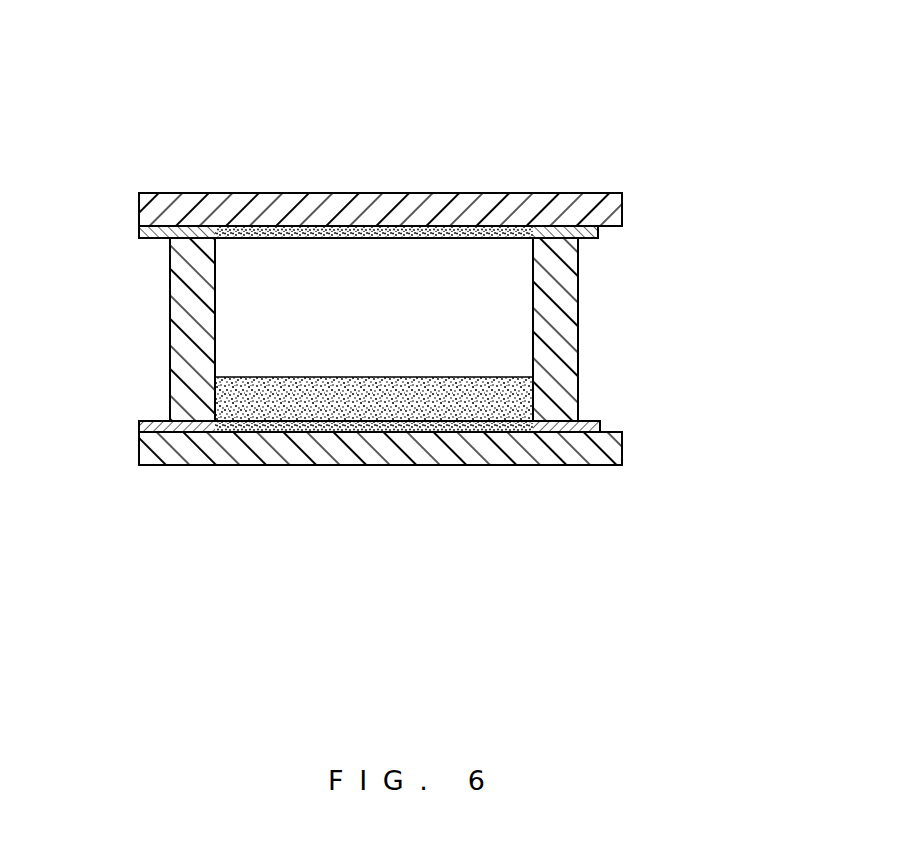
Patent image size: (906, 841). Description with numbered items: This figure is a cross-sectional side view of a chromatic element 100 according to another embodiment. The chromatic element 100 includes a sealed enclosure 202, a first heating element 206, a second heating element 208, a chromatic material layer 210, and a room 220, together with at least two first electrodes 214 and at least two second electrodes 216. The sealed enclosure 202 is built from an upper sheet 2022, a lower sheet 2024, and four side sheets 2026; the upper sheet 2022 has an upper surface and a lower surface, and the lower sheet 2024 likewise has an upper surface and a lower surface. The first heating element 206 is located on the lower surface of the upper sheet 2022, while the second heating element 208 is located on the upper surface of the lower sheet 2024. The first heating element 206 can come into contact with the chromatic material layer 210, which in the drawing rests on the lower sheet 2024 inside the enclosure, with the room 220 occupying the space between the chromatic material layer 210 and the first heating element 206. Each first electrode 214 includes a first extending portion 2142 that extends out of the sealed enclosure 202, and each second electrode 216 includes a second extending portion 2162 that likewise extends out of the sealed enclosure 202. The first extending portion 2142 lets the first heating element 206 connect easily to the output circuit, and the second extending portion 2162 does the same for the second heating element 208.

The device assembly 100 is at (434, 269).
The sealed enclosure 202 is at (481, 332).
The upper sheet 2022 is at (613, 207).
The lower sheet 2024 is at (608, 432).
The side sheets 2026 is at (567, 352).
The first electrodes 214 is at (192, 235).
The first extending portion 2142 is at (139, 230).
The first heating element 206 is at (407, 228).
The second electrodes 216 is at (560, 427).
The second extending portion 2162 is at (139, 424).
The second heating element 208 is at (445, 430).
The chromatic material layer 210 is at (275, 402).
The room 220 is at (247, 252).